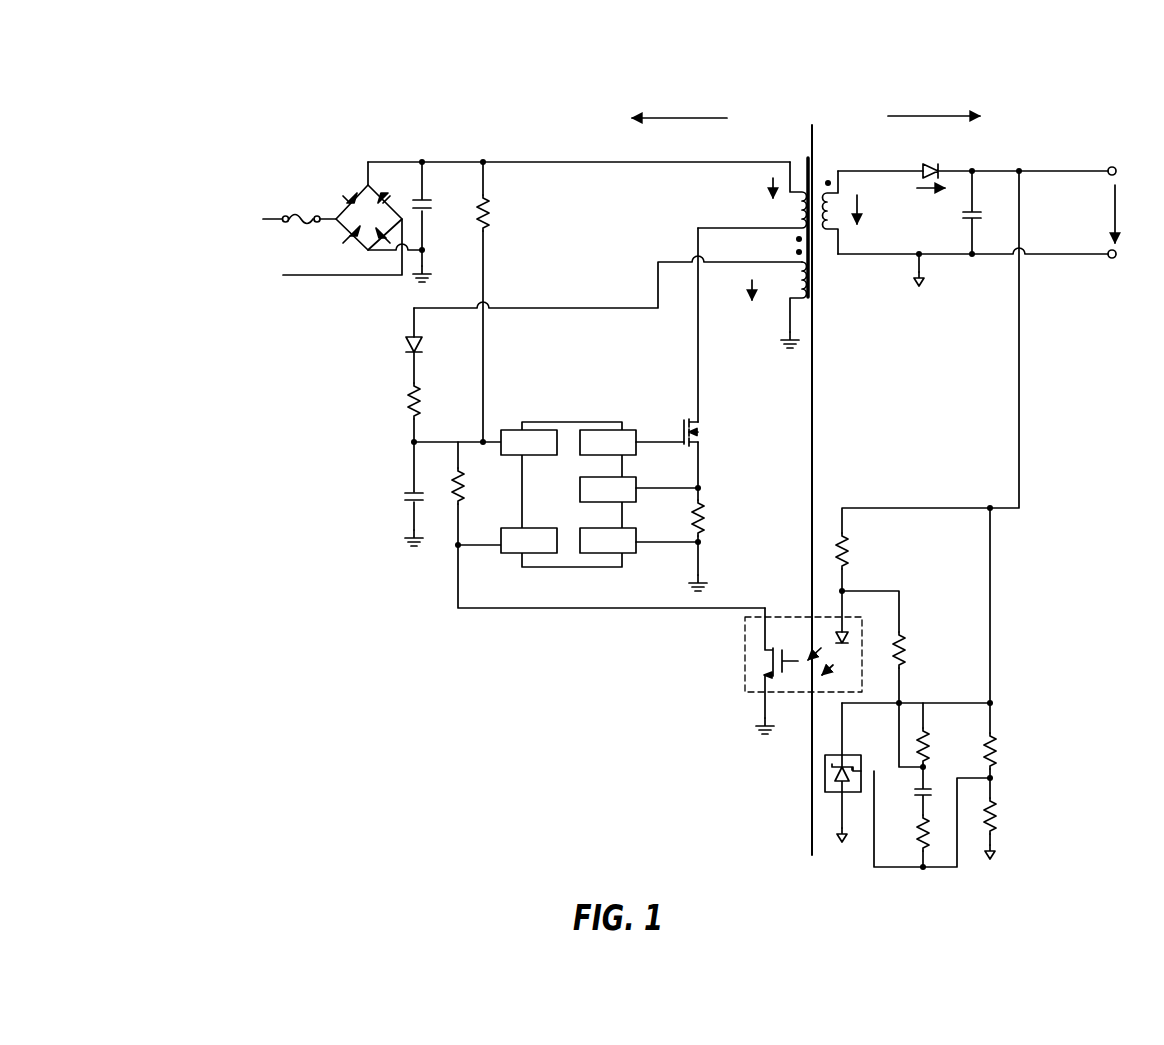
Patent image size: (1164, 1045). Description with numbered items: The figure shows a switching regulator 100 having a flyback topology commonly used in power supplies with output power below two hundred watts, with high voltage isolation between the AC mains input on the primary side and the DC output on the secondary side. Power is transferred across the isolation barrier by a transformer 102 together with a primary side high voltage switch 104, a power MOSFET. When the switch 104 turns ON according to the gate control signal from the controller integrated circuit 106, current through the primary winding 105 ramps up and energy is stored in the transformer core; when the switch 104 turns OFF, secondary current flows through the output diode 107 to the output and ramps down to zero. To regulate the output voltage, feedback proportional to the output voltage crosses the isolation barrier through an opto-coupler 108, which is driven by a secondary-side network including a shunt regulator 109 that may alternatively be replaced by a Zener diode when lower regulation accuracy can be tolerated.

The switching regulator 100 is at (692, 492).
The transformer 102 is at (777, 236).
The primary side high voltage switch 104 is at (702, 411).
The primary winding 105 is at (755, 210).
The controller integrated circuit 106 is at (557, 568).
The output diode 107 is at (946, 165).
The opto-coupler 108 is at (755, 694).
The shunt regulator 109 is at (840, 826).